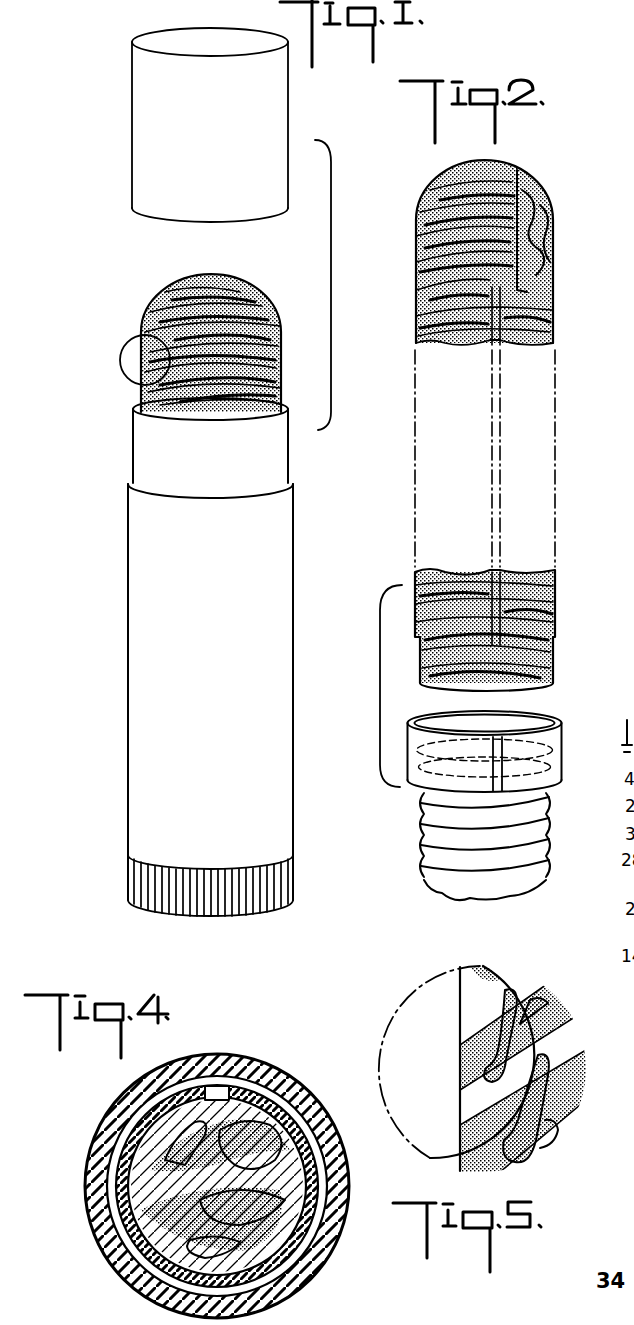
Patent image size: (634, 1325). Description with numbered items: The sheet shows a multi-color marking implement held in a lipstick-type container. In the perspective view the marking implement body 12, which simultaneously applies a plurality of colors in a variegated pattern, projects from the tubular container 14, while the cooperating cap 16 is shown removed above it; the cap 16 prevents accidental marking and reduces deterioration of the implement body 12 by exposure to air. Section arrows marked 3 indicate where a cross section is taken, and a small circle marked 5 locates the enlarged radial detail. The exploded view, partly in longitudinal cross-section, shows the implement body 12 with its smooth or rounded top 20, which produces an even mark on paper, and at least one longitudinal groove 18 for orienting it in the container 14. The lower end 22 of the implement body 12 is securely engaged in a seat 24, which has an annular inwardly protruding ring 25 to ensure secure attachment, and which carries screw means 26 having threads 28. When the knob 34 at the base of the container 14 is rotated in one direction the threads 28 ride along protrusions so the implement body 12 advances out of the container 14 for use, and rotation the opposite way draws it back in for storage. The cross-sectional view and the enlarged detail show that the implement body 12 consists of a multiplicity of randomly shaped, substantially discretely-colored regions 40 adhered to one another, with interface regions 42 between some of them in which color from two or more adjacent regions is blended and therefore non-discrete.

In FIG. 1, the section line 3- 3 is at (212, 262).
In FIG. 1, the detail circle of FIG. 5 is at (120, 366).
In FIG. 1, the marking implement body 12 is at (163, 296).
In FIG. 1, the container 14 is at (181, 657).
In FIG. 4, the container 14 is at (105, 1149).
In FIG. 1, the cap 16 is at (224, 139).
In FIG. 2, the longitudinal groove 18 is at (492, 448).
In FIG. 4, the longitudinal groove 18 is at (236, 1064).
In FIG. 2, the rounded top 20 is at (512, 246).
In FIG. 2, the lower end 22 is at (553, 652).
In FIG. 2, the seat 24 is at (486, 767).
In FIG. 4, the seat 24 is at (126, 1262).
In FIG. 2, the annular inwardly protruding ring 25 is at (417, 783).
In FIG. 2, the screw means 26 is at (511, 847).
In FIG. 2, the threads 28 is at (542, 882).
In FIG. 1, the knob 34 is at (133, 877).
In FIG. 2, the randomly shaped regions 40 is at (556, 258).
In FIG. 5, the randomly shaped regions 40 is at (526, 998).
In FIG. 2, the interface region 42 is at (556, 235).
In FIG. 5, the interface region 42 is at (553, 1118).